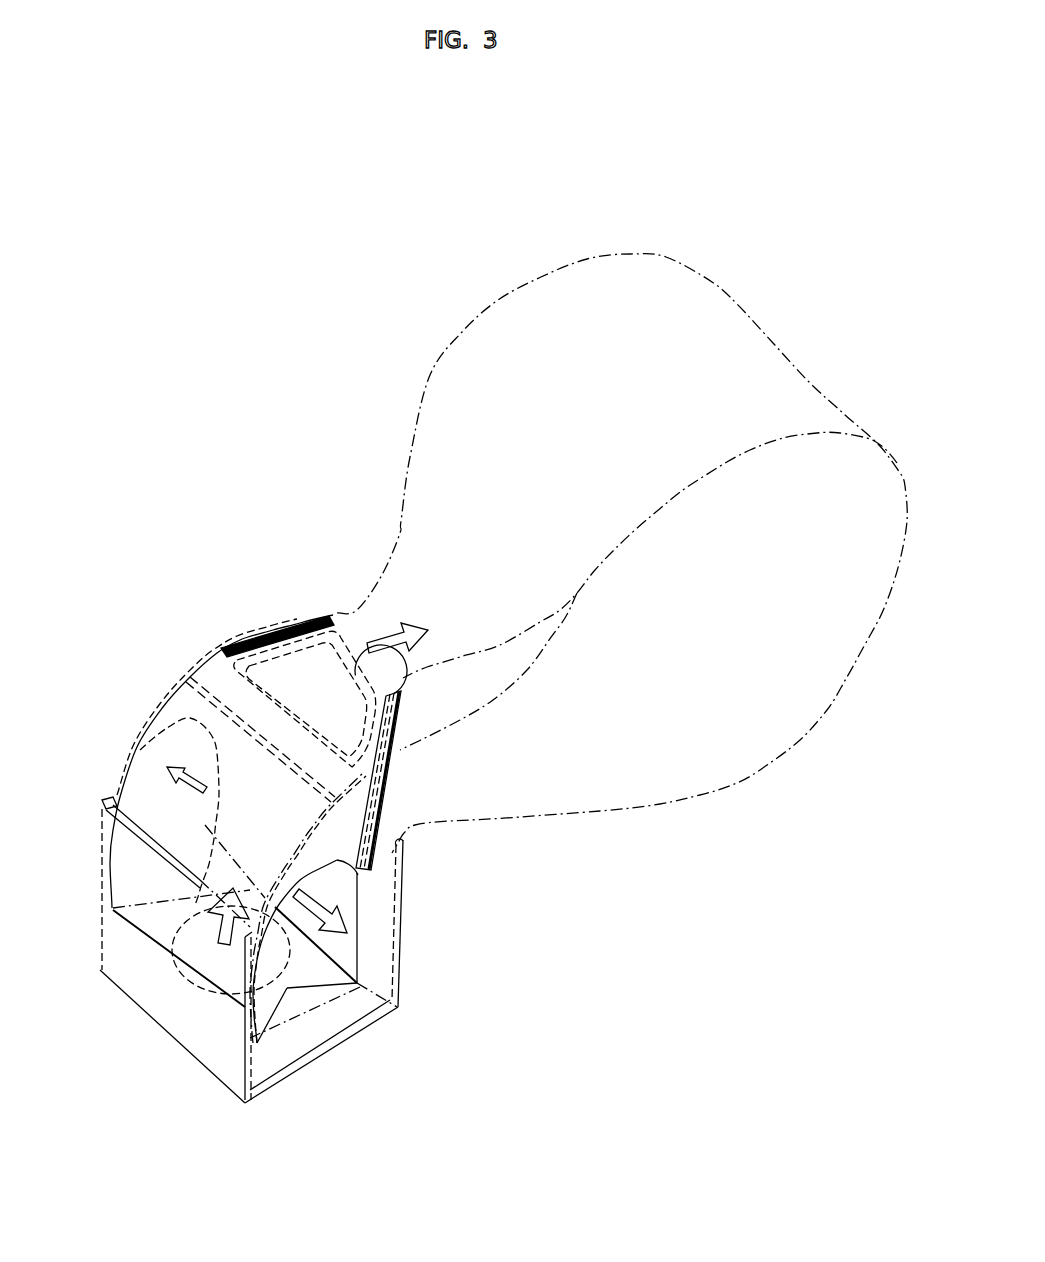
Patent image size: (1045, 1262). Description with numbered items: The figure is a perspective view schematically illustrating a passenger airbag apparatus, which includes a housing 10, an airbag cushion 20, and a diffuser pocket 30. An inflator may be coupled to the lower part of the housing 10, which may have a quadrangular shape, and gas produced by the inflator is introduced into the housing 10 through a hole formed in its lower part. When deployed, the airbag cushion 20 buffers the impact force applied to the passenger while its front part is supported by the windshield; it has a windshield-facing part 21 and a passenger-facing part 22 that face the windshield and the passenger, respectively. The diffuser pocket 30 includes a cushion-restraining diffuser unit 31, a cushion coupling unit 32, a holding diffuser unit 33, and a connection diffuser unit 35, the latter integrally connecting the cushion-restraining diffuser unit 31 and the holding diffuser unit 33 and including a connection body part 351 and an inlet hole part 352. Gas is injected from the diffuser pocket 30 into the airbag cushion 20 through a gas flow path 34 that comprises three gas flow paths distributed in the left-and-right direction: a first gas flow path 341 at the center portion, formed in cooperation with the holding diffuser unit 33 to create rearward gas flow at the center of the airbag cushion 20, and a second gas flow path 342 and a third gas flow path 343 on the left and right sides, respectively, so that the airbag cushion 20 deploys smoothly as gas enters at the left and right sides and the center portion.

The housing 10 is at (385, 1032).
The airbag cushion 20 is at (716, 275).
The windshield-facing part 21 is at (498, 386).
The passenger-facing part 22 is at (863, 648).
The diffuser pocket 30 is at (362, 618).
The cushion-restraining diffuser unit 31 is at (243, 777).
The cushion coupling unit 32 is at (207, 683).
The holding diffuser unit 33 is at (367, 880).
The gas flow path 34 is at (228, 916).
The first gas flow path 341 is at (380, 677).
The second gas flow path 342 is at (336, 887).
The third gas flow path 343 is at (157, 797).
The connection diffuser unit 35 is at (270, 963).
The connection body part 351 is at (267, 1000).
The inlet hole part 352 is at (317, 1007).